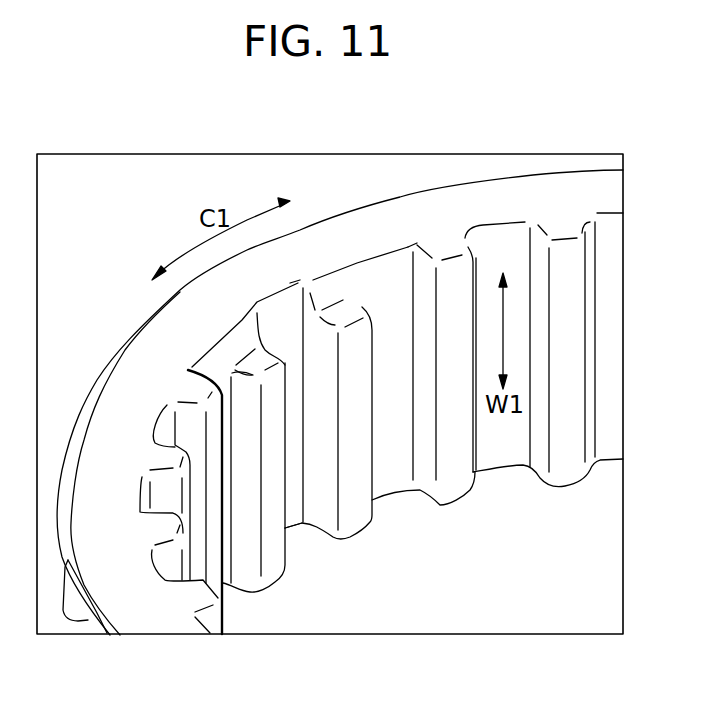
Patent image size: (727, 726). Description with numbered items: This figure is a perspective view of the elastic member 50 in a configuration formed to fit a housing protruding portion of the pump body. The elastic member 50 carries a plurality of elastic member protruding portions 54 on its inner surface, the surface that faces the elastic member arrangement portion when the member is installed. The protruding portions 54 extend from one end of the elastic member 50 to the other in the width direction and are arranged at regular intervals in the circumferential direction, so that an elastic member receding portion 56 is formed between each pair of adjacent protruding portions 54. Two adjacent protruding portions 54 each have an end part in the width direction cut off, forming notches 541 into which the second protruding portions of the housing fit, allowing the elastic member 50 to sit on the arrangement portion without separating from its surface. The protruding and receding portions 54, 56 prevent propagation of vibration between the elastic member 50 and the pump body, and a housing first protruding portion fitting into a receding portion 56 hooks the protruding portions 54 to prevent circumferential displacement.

The elastic member 50 is at (397, 196).
The elastic member protruding portion 54 is at (475, 480).
The notch 541 is at (240, 350).
The elastic member receding portion 56 is at (296, 540).